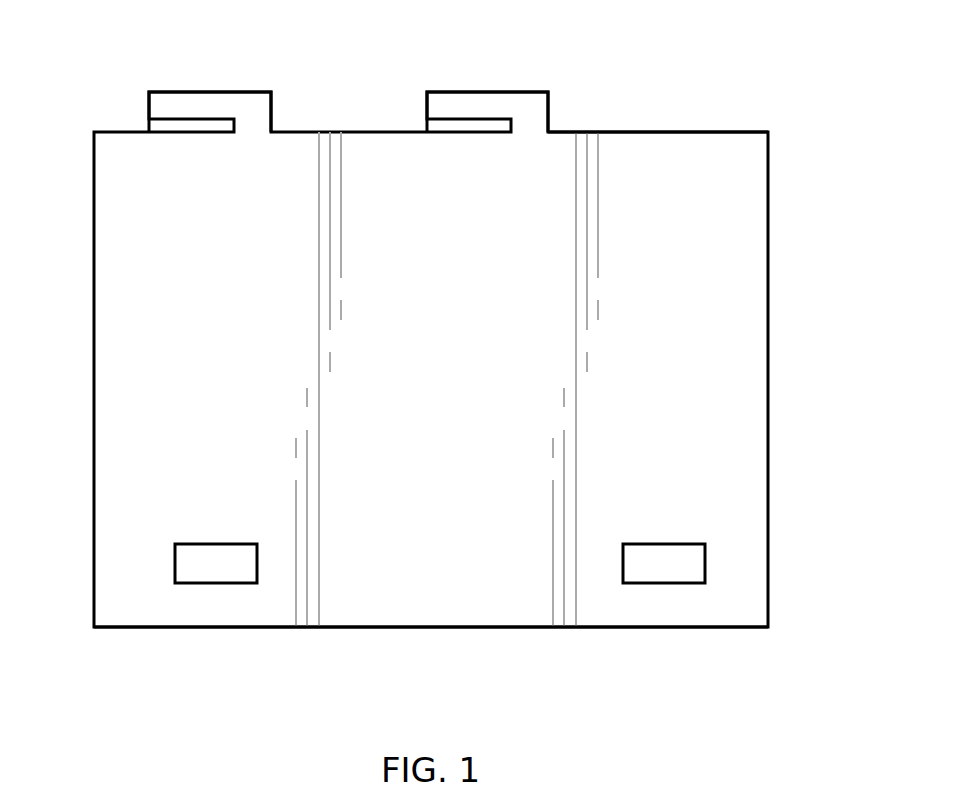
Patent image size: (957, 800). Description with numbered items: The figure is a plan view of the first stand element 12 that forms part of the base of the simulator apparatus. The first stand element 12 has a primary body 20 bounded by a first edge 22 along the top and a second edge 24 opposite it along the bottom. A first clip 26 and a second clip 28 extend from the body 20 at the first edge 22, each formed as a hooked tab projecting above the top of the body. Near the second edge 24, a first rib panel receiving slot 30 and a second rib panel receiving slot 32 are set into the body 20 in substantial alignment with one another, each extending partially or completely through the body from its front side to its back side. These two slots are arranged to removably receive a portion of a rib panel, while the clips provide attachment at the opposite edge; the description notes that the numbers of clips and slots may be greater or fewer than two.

The first stand element 12 is at (777, 52).
The primary body 20 is at (152, 370).
The first edge 22 is at (657, 132).
The second edge 24 is at (431, 627).
The first clip 26 is at (212, 92).
The second clip 28 is at (488, 92).
The first rib panel receiving slot 30 is at (215, 583).
The second rib panel receiving slot 32 is at (663, 583).